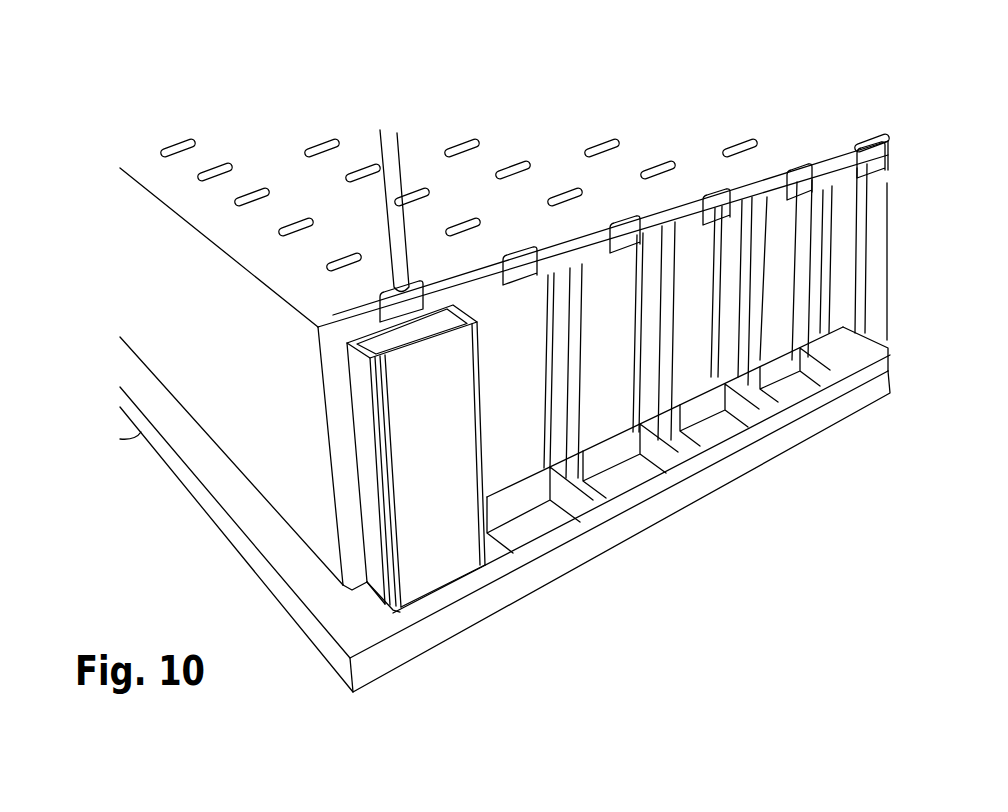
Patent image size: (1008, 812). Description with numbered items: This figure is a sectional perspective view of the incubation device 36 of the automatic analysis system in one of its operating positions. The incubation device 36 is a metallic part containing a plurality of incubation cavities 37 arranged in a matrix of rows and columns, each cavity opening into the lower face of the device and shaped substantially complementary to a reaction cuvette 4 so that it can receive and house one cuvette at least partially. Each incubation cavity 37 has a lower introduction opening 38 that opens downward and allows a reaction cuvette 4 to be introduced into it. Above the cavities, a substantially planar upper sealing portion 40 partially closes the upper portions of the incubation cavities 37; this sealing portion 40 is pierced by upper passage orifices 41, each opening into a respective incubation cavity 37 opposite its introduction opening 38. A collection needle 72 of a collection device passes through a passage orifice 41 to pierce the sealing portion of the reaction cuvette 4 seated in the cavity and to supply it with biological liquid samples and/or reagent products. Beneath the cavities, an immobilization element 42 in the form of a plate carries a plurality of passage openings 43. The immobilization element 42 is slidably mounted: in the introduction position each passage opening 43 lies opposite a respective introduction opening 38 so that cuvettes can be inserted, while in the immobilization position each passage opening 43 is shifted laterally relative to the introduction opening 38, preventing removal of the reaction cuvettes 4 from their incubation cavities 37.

The reaction cuvette 4 is at (417, 560).
The incubation device 36 is at (193, 297).
The incubation cavity 37 is at (693, 350).
The lower introduction opening 38 is at (797, 354).
The upper sealing portion 40 is at (668, 148).
The upper passage orifice 41 is at (560, 197).
The immobilization element 42 is at (262, 567).
The passage opening 43 is at (533, 520).
The collection needle 72 is at (422, 150).